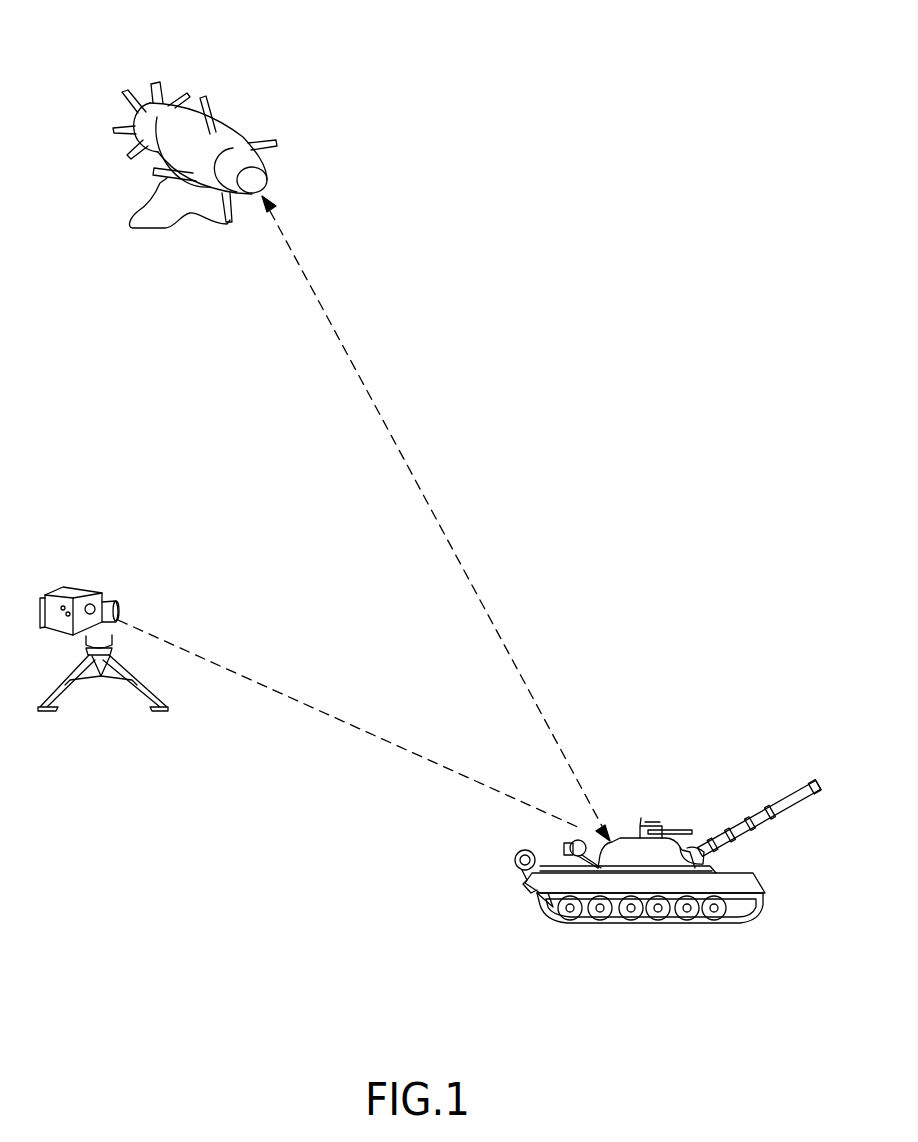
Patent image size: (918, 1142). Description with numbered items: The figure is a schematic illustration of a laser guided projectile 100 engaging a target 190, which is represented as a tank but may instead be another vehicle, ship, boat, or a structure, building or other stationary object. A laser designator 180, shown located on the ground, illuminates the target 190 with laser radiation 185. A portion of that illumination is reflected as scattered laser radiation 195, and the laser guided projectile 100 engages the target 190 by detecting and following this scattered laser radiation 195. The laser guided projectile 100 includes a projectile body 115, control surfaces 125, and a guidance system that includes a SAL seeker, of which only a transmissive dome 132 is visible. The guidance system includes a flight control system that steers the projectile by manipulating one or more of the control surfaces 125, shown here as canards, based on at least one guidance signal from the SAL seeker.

The laser guided projectile 100 is at (322, 78).
The projectile body 115 is at (240, 133).
The control surfaces 125 is at (134, 223).
The transmissive dome 132 is at (268, 191).
The laser designator 180 is at (73, 590).
The laser radiation 185 is at (207, 660).
The target 190 is at (648, 818).
The scattered laser radiation 195 is at (481, 602).